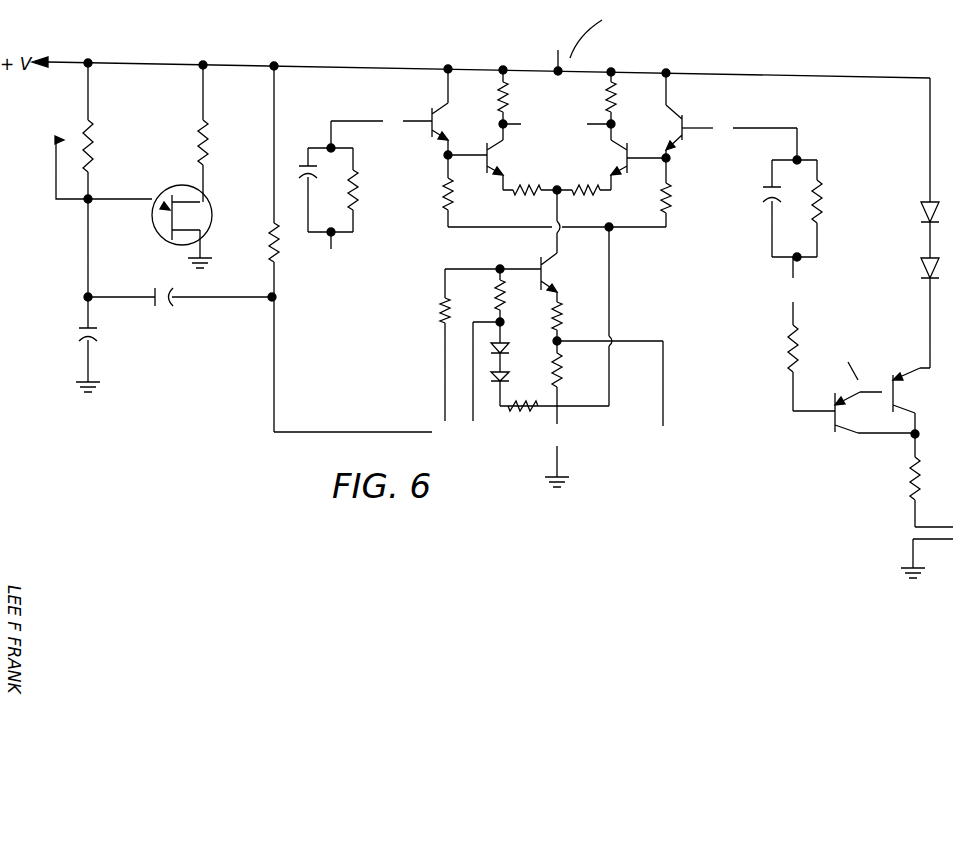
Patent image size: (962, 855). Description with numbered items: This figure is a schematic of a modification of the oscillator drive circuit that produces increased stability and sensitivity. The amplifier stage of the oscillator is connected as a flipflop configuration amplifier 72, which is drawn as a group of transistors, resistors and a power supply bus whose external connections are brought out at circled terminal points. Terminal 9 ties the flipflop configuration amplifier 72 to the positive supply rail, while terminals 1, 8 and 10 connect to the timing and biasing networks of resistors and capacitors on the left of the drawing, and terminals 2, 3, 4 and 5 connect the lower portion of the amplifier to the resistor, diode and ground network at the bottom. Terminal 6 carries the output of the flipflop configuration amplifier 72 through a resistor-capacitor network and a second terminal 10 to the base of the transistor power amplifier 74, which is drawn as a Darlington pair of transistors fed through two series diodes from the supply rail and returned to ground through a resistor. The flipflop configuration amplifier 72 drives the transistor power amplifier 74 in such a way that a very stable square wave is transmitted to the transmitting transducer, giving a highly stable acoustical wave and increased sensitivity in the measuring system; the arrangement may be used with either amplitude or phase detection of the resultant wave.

The IC terminal 1 is at (381, 121).
The IC terminal 2 is at (443, 432).
The IC terminal 3 is at (557, 437).
The IC terminal 4 is at (663, 437).
The IC terminal 5 is at (473, 432).
The IC terminal 6 is at (707, 128).
The IC terminal 8 is at (466, 191).
The IC terminal 9 is at (558, 50).
The IC terminal 10 is at (654, 207).
The flipflop configuration amplifier 72 is at (598, 34).
The transistor power amplifier 74 is at (877, 398).